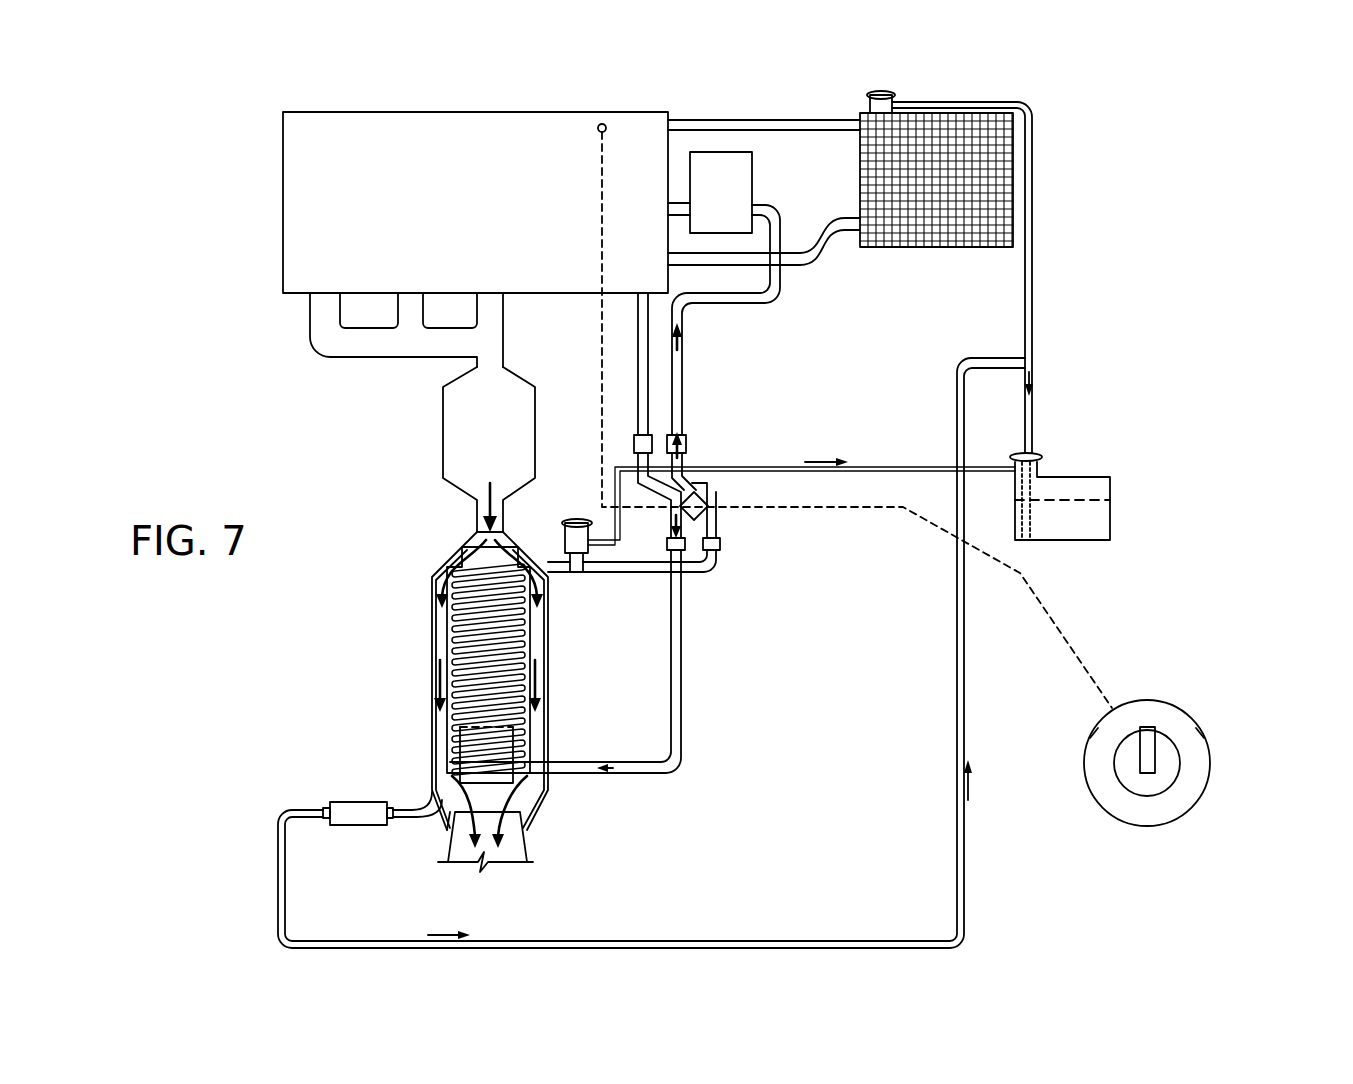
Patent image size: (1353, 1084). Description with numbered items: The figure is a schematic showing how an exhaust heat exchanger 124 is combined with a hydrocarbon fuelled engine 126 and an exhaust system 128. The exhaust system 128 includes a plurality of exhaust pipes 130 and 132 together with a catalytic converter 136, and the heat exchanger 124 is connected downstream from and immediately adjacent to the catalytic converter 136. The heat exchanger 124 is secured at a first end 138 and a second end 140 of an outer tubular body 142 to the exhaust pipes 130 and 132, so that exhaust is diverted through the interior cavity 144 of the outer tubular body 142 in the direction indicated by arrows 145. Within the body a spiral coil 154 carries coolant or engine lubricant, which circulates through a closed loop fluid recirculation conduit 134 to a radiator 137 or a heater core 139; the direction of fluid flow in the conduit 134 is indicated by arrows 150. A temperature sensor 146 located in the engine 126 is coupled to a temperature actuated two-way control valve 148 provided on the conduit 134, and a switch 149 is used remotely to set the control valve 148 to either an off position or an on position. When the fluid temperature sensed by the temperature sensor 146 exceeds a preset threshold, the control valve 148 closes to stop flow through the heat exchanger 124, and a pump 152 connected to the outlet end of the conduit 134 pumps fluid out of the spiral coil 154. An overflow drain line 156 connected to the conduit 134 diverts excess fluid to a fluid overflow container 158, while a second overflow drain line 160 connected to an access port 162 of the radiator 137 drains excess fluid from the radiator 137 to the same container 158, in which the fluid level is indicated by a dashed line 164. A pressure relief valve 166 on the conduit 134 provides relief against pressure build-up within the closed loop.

The heat exchanger 124 is at (556, 711).
The hydrocarbon fuelled engine 126 is at (488, 222).
The exhaust system 128 is at (385, 372).
The exhaust pipe 130 is at (503, 330).
The exhaust pipe 132 is at (455, 843).
The closed loop fluid recirculation conduit 134 is at (685, 752).
The catalytic converter 136 is at (460, 447).
The radiator 137 is at (918, 250).
The first end 138 is at (428, 553).
The heater core 139 is at (752, 182).
The second end 140 is at (545, 812).
The outer tubular body 142 is at (548, 652).
The interior cavity 144 is at (480, 800).
The arrows 145 is at (476, 510).
The temperature sensor 146 is at (598, 129).
The two-way control valve 148 is at (702, 512).
The switch 149 is at (1212, 790).
The arrows 150 is at (680, 345).
The pump 152 is at (350, 805).
The spiral coil 154 is at (470, 712).
The overflow drain line 156 is at (440, 656).
The fluid overflow container 158 is at (1110, 520).
The overflow drain line 160 is at (1032, 255).
The access port 162 is at (870, 95).
The dashed line 164 is at (1078, 500).
The pressure relief valve 166 is at (577, 530).